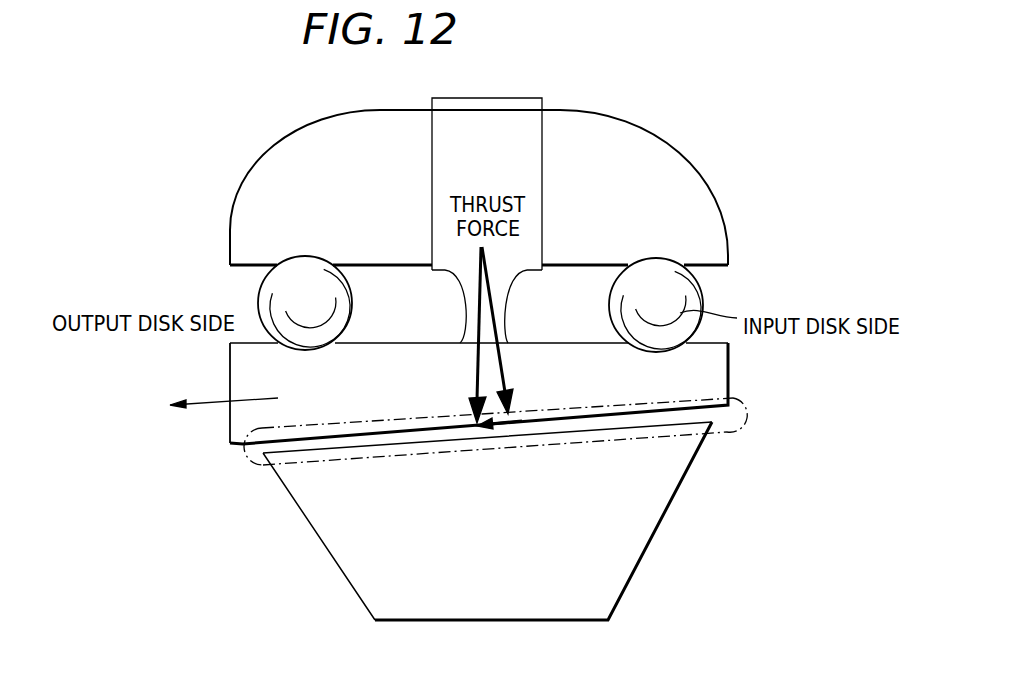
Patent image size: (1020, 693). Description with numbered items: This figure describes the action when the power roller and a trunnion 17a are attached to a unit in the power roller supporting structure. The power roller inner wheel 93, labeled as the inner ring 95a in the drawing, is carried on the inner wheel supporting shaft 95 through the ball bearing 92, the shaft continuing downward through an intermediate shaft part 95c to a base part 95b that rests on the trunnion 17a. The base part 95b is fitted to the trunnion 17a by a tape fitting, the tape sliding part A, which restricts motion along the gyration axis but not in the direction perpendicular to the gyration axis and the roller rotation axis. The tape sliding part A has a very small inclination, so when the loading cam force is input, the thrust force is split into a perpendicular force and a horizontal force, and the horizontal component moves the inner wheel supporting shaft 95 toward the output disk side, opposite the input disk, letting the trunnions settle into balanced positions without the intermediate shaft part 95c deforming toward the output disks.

The power roller inner wheel 93 is at (680, 173).
The inner wheel supporting shaft 95 is at (526, 90).
The inner ring 95a is at (528, 143).
The base part 95b is at (713, 372).
The intermediate shaft part 95c is at (507, 308).
The ball bearing 92 is at (270, 292).
The trunnion 17a is at (637, 517).
The tape sliding part A is at (263, 465).